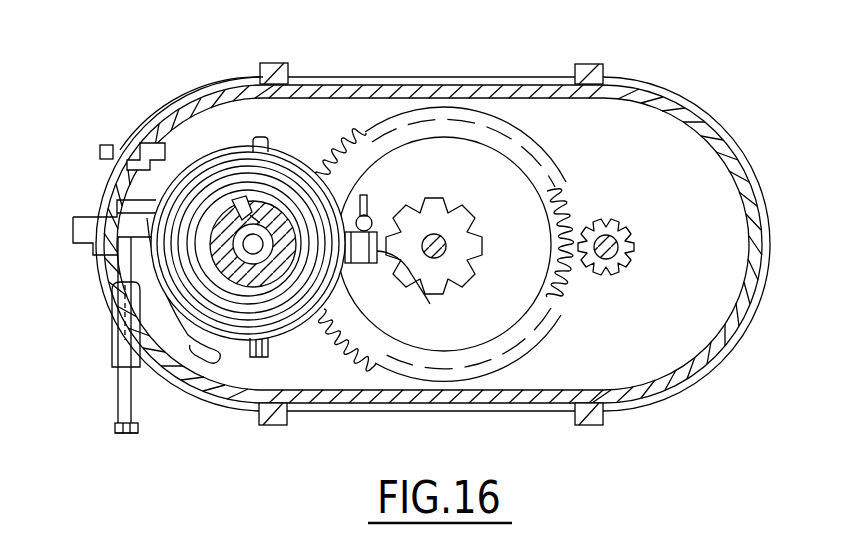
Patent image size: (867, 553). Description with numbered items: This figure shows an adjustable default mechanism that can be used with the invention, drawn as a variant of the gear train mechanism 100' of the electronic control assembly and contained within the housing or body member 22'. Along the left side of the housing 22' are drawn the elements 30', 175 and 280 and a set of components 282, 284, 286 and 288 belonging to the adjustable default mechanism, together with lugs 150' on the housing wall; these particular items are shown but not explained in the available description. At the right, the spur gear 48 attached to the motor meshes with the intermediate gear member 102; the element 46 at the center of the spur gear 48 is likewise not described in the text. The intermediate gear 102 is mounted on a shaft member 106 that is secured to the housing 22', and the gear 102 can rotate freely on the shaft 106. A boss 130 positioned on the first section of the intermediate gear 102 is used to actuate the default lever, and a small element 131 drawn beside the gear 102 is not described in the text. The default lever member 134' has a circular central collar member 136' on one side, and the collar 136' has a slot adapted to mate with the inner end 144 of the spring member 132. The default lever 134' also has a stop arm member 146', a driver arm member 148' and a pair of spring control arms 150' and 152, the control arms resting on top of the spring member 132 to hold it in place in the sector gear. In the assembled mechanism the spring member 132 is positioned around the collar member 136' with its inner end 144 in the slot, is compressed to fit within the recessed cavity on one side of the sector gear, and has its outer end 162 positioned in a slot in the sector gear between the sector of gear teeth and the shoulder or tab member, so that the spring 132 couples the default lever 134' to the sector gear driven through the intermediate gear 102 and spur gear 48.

The gear train mechanism 100' is at (468, 240).
The housing or body member 22' is at (468, 244).
The housing wall 30' is at (450, 238).
The spring control arm 150' is at (416, 267).
The lug 175 is at (107, 143).
The driver arm member 148' is at (108, 176).
The housing end wall 280 is at (93, 230).
The bracket 288 is at (115, 250).
The slide block 282 is at (135, 330).
The nut 284 is at (122, 400).
The rod end 286 is at (138, 434).
The outer end of spring member 162 is at (188, 385).
The intermediate gear member 102 is at (503, 177).
The boss 130 is at (373, 220).
The shaft member 106 is at (444, 239).
The stop arm member 146' is at (440, 311).
The pawl 131 is at (364, 196).
The spur gear 48 is at (617, 228).
The drive shaft 46 is at (619, 251).
The spring member 132 is at (276, 332).
The inner end of spring member 144 is at (252, 206).
The circular central collar member 136' is at (306, 253).
The spring control arm 152 is at (240, 205).
The default lever member 134' is at (209, 159).